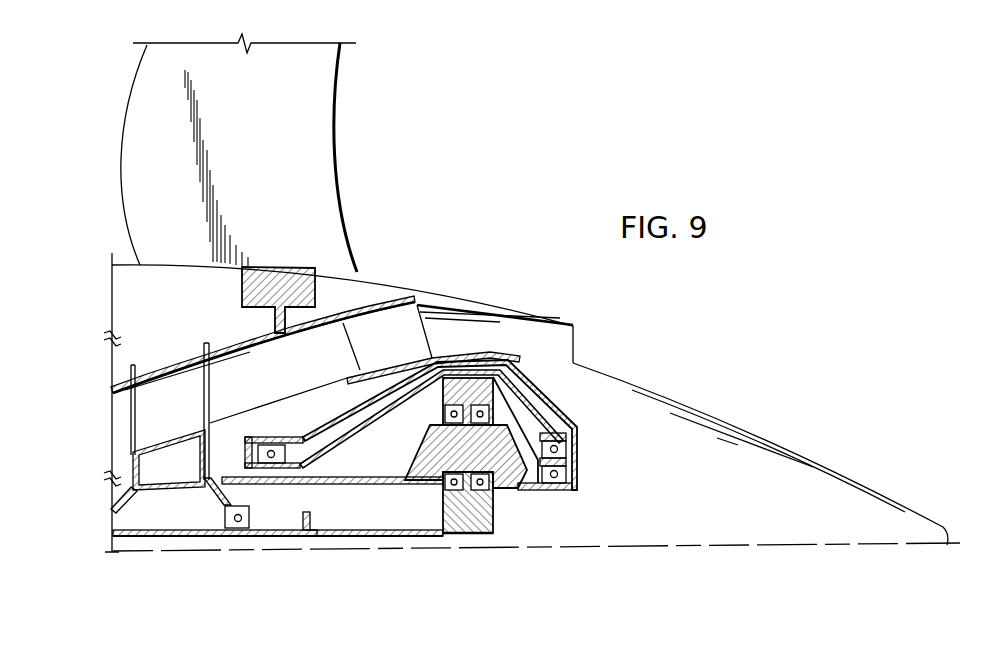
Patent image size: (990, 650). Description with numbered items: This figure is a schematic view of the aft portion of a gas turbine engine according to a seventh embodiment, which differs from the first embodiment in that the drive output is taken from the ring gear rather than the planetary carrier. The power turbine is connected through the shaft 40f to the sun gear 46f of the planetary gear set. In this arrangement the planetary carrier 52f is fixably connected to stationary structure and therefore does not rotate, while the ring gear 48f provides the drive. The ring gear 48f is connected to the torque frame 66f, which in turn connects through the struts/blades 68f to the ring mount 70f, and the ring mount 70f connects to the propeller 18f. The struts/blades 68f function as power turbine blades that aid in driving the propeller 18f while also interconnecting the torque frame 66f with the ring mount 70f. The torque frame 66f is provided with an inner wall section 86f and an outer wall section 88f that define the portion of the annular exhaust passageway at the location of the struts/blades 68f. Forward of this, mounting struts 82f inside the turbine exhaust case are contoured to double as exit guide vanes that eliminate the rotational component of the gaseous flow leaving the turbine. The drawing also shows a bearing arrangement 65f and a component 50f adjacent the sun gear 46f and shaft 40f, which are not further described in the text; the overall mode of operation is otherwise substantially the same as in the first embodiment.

The propeller 18f is at (328, 100).
The ring mount 70f is at (318, 283).
The outer wall section 88f is at (381, 360).
The inner wall section 86f is at (417, 332).
The struts/blades 68f is at (420, 350).
The torque frame 66f is at (432, 358).
The ring gear 48f is at (513, 350).
The bearing assembly 65f is at (573, 412).
The mounting struts 82f is at (140, 408).
The shaft 40f is at (263, 536).
The planetary carrier 52f is at (417, 484).
The upper shaft section 50f is at (495, 522).
The sun gear 46f is at (490, 537).